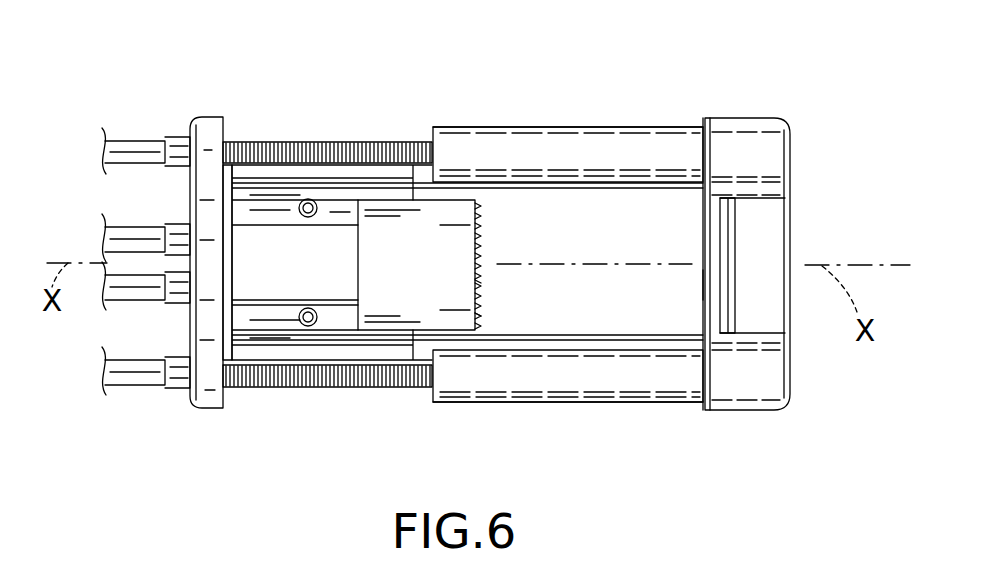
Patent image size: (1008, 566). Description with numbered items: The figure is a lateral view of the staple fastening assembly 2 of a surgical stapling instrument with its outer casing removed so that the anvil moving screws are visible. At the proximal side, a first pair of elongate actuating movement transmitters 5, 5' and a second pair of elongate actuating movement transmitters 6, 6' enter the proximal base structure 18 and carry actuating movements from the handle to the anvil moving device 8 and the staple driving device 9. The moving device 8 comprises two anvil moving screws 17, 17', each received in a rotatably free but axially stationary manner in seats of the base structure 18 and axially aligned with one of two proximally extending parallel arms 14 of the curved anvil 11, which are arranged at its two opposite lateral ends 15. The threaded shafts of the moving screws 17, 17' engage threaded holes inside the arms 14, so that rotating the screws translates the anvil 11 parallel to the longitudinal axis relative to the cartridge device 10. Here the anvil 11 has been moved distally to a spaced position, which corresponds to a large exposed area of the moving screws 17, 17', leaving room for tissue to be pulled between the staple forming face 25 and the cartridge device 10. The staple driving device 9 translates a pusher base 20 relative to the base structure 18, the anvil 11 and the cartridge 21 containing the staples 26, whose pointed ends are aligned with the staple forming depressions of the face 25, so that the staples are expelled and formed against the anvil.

The staple fastening assembly 2 is at (505, 98).
The elongate actuating movement transmitter 5 is at (142, 122).
The elongate actuating movement transmitter 5' is at (146, 407).
The elongate actuating movement transmitter 6 is at (129, 221).
The elongate actuating movement transmitter 6' is at (128, 319).
The anvil moving device 8 is at (452, 143).
The staple driving device 9 is at (258, 212).
The cartridge device 10 is at (388, 288).
The curved anvil 11 is at (762, 236).
The proximally extending parallel arm 14 is at (612, 127).
The lateral end of the anvil 15 is at (727, 108).
The anvil moving screw 17 is at (327, 114).
The anvil moving screw 17' is at (327, 421).
The proximal base structure 18 is at (208, 396).
The pusher base 20 is at (263, 303).
The cartridge 21 is at (448, 253).
The staple forming face 25 is at (697, 289).
The staples 26 is at (482, 282).